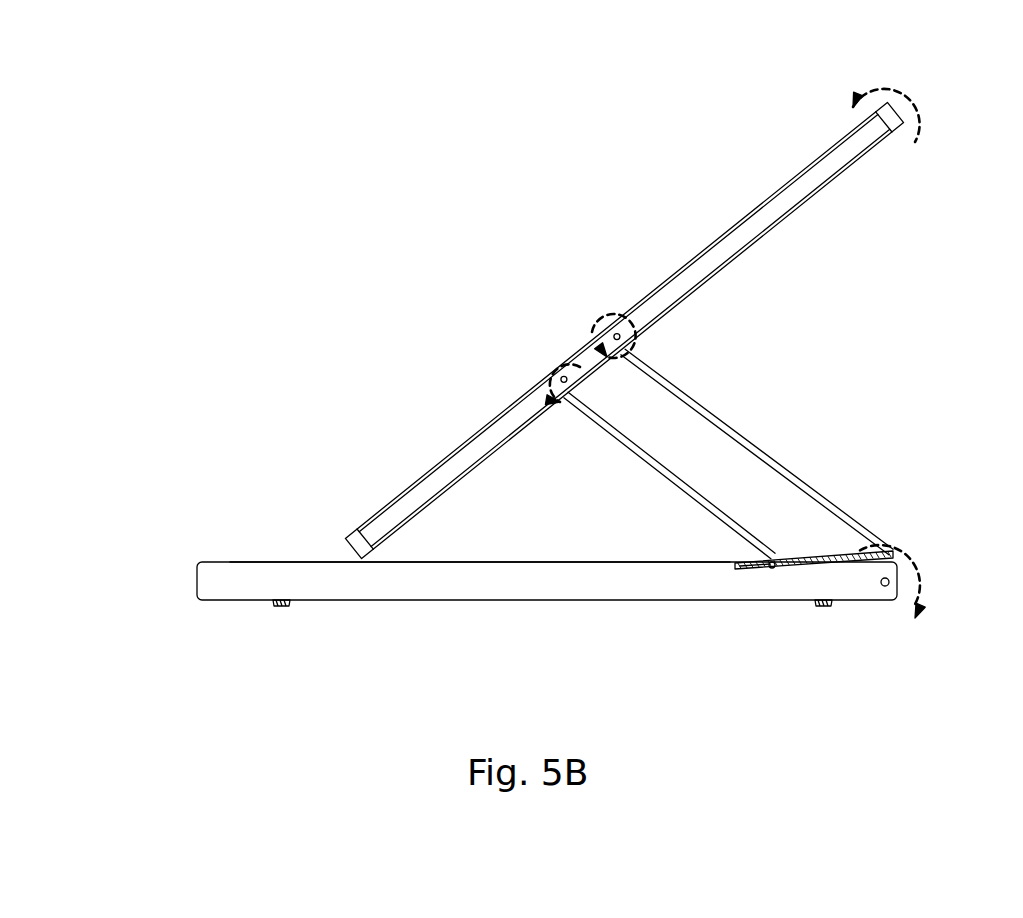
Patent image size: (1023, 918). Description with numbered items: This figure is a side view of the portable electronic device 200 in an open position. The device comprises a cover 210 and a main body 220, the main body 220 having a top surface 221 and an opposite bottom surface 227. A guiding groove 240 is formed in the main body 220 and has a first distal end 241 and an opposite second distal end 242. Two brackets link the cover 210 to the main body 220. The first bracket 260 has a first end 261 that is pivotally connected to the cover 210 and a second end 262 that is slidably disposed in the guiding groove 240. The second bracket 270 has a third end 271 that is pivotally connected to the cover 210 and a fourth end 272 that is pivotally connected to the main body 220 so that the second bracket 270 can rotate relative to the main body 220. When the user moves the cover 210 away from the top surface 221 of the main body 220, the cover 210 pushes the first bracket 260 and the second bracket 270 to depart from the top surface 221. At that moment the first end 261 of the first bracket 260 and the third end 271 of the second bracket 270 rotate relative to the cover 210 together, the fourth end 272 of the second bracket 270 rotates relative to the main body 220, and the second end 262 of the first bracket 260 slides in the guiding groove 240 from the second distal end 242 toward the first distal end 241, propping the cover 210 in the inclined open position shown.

The portable electronic device 200 is at (191, 94).
The cover 210 is at (842, 154).
The main body 220 is at (418, 585).
The top surface 221 is at (473, 560).
The bottom surface 227 is at (327, 601).
The guiding groove 240 is at (827, 563).
The first distal end 241 is at (893, 553).
The second distal end 242 is at (755, 567).
The first bracket 260 is at (685, 497).
The first end 261 is at (553, 364).
The second end 262 is at (780, 567).
The second bracket 270 is at (750, 450).
The third end 271 is at (613, 332).
The fourth end 272 is at (898, 578).